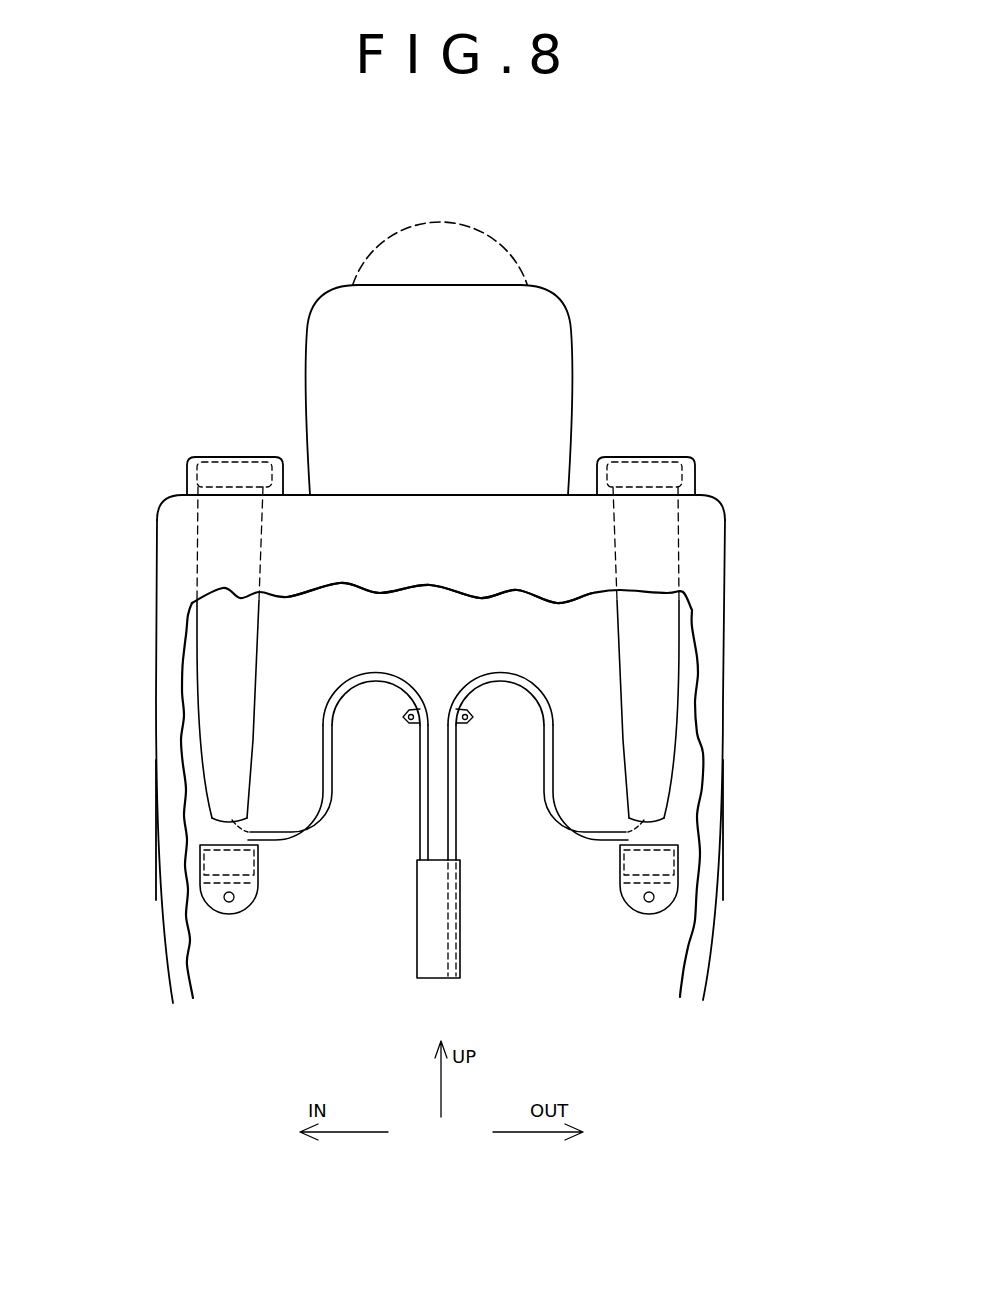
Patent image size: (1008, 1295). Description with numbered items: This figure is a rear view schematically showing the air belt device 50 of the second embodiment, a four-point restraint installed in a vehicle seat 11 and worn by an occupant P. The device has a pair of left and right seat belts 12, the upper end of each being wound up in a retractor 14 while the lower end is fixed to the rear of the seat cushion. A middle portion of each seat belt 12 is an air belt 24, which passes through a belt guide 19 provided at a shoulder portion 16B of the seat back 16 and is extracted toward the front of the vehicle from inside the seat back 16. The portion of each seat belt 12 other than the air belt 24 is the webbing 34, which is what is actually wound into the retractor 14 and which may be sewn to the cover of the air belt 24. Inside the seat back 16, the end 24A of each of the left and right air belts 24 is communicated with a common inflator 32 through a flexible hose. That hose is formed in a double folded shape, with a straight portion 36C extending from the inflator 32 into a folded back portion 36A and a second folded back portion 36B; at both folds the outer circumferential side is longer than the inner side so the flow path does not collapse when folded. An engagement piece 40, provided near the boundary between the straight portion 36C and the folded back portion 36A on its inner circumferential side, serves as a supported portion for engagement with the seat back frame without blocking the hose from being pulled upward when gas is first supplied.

The occupant head P is at (507, 243).
The air belt device 50 is at (710, 417).
The vehicle seat 11 is at (748, 752).
The seat belt 12 is at (456, 779).
The retractor 14 is at (670, 881).
The seat back 16 is at (708, 665).
The shoulder portion 16B is at (707, 510).
The belt guide 19 is at (652, 457).
The air belt 24 is at (653, 630).
The end of the air belt 24A is at (652, 808).
The inflator 32 is at (443, 963).
The webbing 34 is at (657, 833).
The folded back portion 36A is at (475, 681).
The folded back portion 36B is at (593, 842).
The straight portion 36C is at (427, 820).
The engagement piece 40 is at (410, 723).